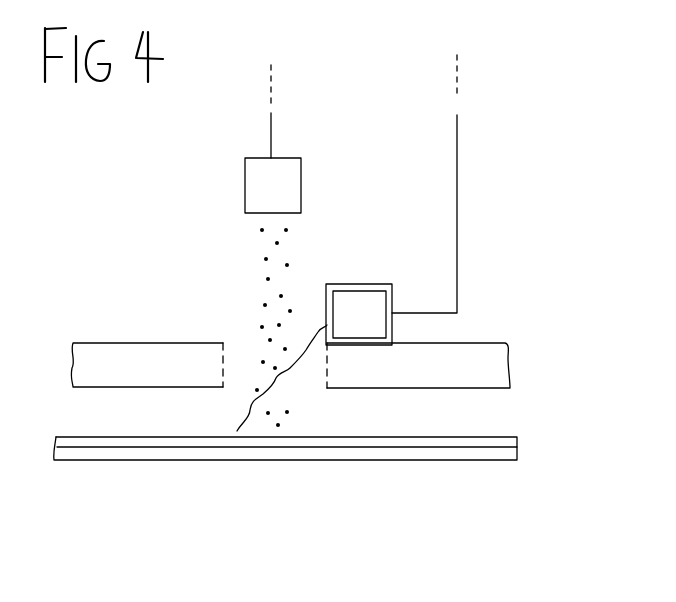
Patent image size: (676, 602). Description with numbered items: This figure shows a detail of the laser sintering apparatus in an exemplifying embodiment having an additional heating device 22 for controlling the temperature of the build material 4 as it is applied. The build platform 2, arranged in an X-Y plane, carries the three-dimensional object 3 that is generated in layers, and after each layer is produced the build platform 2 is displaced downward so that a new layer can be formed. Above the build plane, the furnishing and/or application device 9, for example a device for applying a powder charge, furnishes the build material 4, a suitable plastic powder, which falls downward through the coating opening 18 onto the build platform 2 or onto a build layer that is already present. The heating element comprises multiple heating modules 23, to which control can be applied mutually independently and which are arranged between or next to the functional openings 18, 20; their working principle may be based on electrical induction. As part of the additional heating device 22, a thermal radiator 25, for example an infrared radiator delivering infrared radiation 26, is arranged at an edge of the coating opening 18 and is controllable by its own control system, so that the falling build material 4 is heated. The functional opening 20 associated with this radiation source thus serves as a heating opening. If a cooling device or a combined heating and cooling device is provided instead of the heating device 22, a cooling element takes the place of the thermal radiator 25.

The build platform 2 is at (500, 452).
The three-dimensional object 3 is at (503, 440).
The build material 4 is at (292, 248).
The furnishing and/or application device 9 is at (263, 200).
The coating opening 18 is at (158, 329).
The functional opening 20 is at (147, 365).
The additional heating device 22 is at (365, 284).
The heating module 23 is at (487, 360).
The thermal radiator 25 is at (347, 329).
The infrared radiation 26 is at (286, 378).